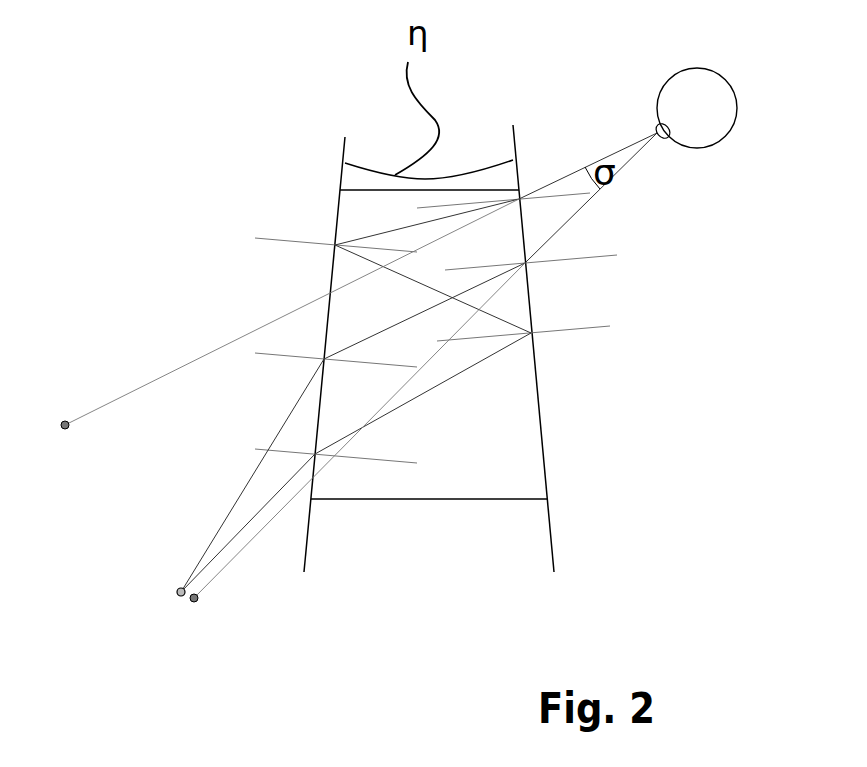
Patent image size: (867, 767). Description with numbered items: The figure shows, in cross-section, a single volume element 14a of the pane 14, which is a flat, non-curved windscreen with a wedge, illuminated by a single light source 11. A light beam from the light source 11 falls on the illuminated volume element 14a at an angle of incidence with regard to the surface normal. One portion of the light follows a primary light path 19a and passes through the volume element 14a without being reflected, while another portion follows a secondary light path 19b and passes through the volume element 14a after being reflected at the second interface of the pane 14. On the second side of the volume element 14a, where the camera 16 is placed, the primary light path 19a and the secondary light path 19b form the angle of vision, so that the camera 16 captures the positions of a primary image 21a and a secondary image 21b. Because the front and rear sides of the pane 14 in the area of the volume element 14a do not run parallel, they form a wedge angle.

The light source 11 is at (178, 590).
The pane 14 is at (553, 560).
The volume element 14a is at (352, 183).
The camera 16 is at (670, 76).
The primary light path 19a is at (217, 532).
The secondary light path 19b is at (362, 257).
The primary image 21a is at (197, 602).
The secondary image 21b is at (65, 425).